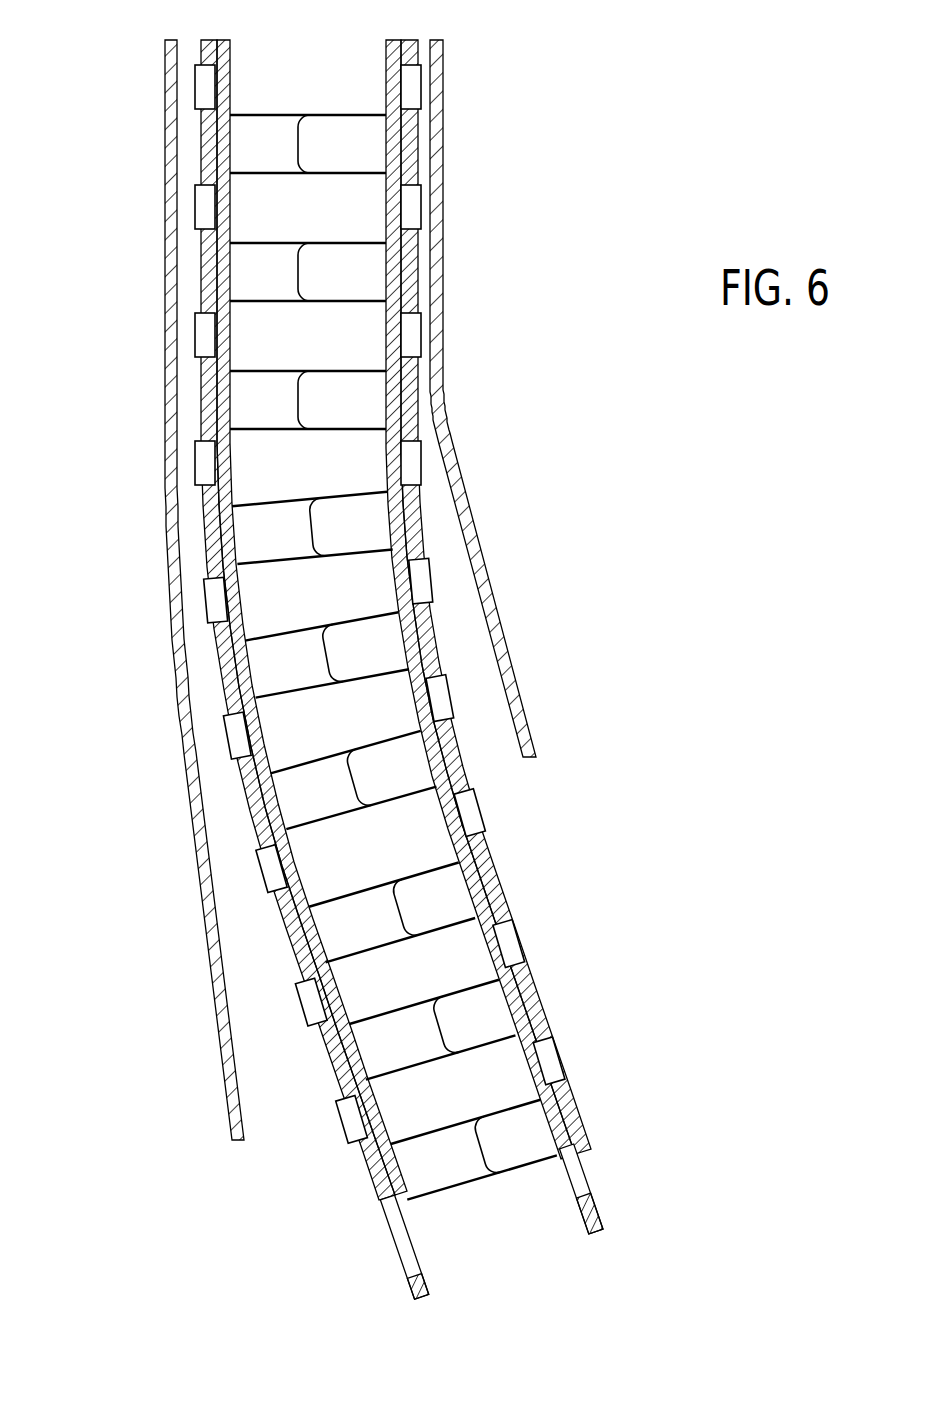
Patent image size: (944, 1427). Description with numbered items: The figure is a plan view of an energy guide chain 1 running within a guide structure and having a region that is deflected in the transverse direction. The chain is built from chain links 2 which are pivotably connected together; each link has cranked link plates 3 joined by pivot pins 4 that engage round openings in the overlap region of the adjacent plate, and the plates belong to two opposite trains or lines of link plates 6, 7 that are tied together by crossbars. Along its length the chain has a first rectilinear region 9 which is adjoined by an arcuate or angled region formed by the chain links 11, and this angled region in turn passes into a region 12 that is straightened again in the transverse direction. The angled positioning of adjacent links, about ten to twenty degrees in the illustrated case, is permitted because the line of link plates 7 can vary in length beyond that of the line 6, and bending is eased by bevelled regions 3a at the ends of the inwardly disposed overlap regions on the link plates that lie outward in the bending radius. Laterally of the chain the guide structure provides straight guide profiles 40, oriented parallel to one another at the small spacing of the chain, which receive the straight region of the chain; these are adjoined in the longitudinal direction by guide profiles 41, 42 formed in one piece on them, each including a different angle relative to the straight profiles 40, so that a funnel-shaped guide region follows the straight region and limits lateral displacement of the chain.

The energy guide chain 1 is at (362, 680).
The chain link 2 is at (433, 852).
The link plate 3 is at (468, 903).
The bevelled region 3a is at (220, 47).
The pivot pin 4 is at (503, 937).
The line of link plates 6 is at (563, 1180).
The line of link plates 7 is at (412, 1222).
The first rectilinear region 9 is at (420, 283).
The chain links 11 is at (268, 892).
The straightened region 12 is at (330, 1155).
The straight guide profile 40 is at (351, 590).
The guide profile 41 is at (224, 1016).
The guide profile 42 is at (512, 677).